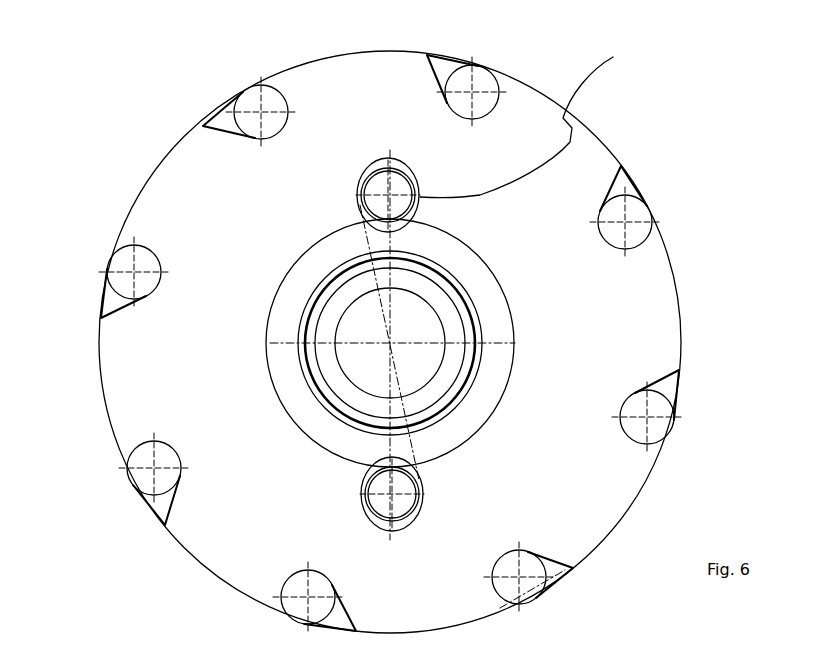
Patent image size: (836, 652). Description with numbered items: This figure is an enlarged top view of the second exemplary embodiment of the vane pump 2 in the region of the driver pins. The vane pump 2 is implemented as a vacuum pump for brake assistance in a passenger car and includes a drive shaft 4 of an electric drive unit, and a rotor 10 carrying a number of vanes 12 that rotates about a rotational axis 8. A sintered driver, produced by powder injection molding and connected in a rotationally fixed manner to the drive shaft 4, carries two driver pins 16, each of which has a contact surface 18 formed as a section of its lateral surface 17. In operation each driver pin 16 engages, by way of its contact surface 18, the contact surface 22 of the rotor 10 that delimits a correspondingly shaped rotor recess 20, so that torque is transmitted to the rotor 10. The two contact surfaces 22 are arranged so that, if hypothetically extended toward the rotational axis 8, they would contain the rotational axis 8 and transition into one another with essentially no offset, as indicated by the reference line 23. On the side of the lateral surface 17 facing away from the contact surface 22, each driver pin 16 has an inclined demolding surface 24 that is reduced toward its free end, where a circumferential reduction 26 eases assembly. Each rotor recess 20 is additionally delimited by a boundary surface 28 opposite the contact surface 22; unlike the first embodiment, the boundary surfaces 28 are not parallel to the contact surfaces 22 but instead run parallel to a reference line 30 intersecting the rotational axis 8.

The vane pump 2 is at (72, 86).
The drive shaft 4 is at (365, 317).
The rotational axis 8 is at (300, 348).
The rotor 10 is at (127, 340).
The vanes 12 is at (120, 290).
The driver pins 16 is at (414, 175).
The lateral surface 17 is at (338, 197).
The contact surface of the driver pin 18 is at (356, 200).
The rotor recess 20 is at (343, 181).
The contact surface of the rotor 22 is at (420, 205).
The reference line 23 is at (375, 277).
The demolding surface 24 is at (420, 187).
The circumferential reduction 26 is at (418, 472).
The boundary surface 28 is at (392, 160).
The reference line 30 is at (393, 246).